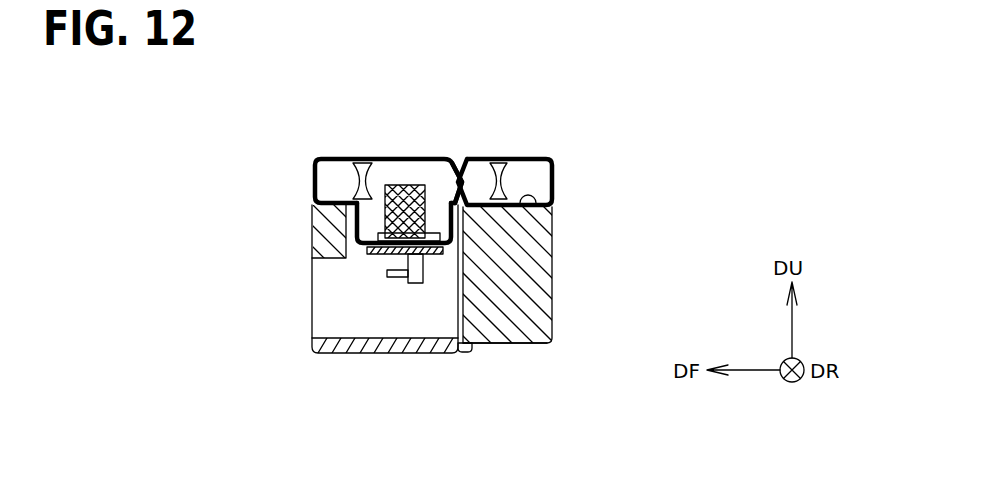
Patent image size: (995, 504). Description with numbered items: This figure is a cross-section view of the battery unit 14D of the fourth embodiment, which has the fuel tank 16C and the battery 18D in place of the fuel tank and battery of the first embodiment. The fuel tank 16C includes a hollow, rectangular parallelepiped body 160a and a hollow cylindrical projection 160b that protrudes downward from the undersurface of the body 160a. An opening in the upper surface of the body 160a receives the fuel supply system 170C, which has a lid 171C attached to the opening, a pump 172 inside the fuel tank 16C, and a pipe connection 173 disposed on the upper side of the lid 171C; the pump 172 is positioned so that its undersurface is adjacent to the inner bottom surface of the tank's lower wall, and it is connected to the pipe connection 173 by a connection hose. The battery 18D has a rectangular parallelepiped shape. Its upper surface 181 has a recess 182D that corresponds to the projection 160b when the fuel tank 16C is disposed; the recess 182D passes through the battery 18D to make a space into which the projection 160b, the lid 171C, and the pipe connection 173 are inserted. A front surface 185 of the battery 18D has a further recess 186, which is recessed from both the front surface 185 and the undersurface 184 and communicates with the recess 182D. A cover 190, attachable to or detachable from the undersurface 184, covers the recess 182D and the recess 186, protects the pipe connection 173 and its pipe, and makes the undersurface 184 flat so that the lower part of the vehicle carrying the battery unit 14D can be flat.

The battery unit 14D is at (690, 95).
The fuel tank 16C is at (562, 178).
The fuel supply system 170C is at (533, 80).
The lid 171C is at (452, 167).
The pump 172 is at (430, 235).
The pipe connection 173 is at (436, 230).
The body 160a is at (308, 160).
The projection 160b is at (308, 206).
The upper surface 181 is at (542, 203).
The front surface 185 is at (312, 248).
The recess 186 is at (333, 260).
The cover 190 is at (325, 351).
The recess 182D is at (454, 350).
The undersurface 184 is at (520, 343).
The battery 18D is at (560, 317).